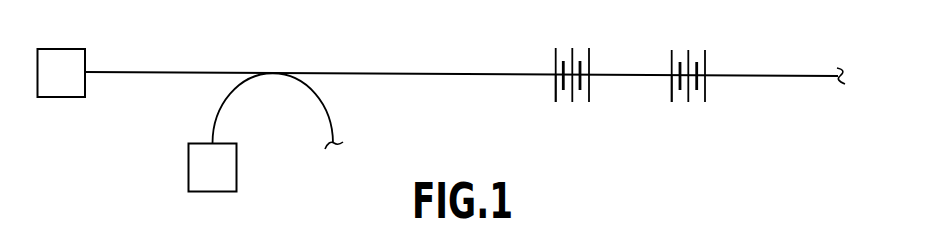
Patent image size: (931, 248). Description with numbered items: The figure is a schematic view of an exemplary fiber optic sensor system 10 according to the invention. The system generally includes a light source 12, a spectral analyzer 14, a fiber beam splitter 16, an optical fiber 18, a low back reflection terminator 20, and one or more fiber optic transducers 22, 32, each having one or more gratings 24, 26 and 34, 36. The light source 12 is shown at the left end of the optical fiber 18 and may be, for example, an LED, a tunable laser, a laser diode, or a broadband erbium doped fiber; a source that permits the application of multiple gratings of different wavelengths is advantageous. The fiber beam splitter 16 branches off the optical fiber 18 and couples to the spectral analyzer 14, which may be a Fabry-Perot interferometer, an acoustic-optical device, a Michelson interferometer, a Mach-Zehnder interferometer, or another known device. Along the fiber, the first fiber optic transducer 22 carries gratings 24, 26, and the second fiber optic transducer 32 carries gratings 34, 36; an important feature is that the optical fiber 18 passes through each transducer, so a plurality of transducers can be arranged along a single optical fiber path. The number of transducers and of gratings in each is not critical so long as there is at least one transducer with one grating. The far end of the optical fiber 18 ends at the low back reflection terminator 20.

The fiber optic sensor system 10 is at (130, 149).
The light source 12 is at (67, 49).
The spectral analyzer 14 is at (217, 192).
The fiber beam splitter 16 is at (277, 72).
The optical fiber 18 is at (413, 73).
The low back reflection terminator 20 is at (870, 88).
The fiber optic transducer 22 is at (564, 90).
The grating 24 is at (590, 57).
The grating 26 is at (556, 92).
The fiber optic transducer 32 is at (677, 90).
The grating 34 is at (705, 62).
The grating 36 is at (672, 90).